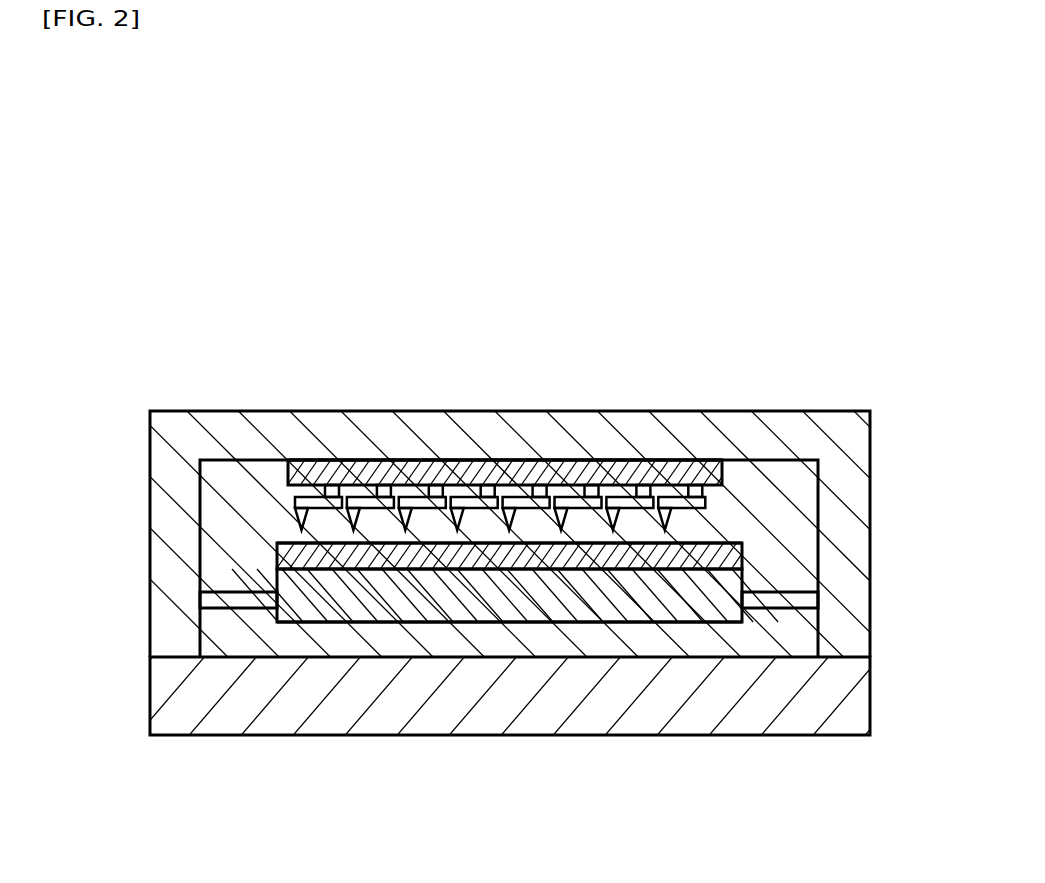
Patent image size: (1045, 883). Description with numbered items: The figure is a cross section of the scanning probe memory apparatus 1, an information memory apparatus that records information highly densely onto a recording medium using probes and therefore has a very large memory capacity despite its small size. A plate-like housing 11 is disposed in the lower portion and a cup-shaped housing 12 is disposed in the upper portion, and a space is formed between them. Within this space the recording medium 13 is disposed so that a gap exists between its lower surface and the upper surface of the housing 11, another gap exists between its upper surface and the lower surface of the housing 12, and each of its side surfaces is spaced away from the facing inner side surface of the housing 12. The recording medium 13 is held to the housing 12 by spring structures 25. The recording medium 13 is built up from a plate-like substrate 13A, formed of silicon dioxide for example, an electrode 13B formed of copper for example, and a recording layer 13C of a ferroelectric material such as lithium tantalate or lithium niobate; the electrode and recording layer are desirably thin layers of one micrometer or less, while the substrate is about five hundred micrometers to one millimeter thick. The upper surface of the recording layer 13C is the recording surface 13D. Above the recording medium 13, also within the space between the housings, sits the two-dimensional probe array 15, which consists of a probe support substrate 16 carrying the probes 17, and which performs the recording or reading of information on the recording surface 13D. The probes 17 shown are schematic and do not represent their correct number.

The scanning probe memory apparatus 1 is at (814, 372).
The plate-like housing 11 is at (517, 710).
The cup-shaped housing 12 is at (483, 458).
The recording medium 13 is at (741, 557).
The substrate 13A is at (617, 613).
The electrode 13B is at (277, 560).
The recording layer 13C is at (278, 543).
The recording surface 13D is at (727, 542).
The two-dimensional probe array 15 is at (390, 450).
The probe support substrate 16 is at (537, 458).
The probes 17 is at (653, 492).
The spring structure 25 is at (240, 602).